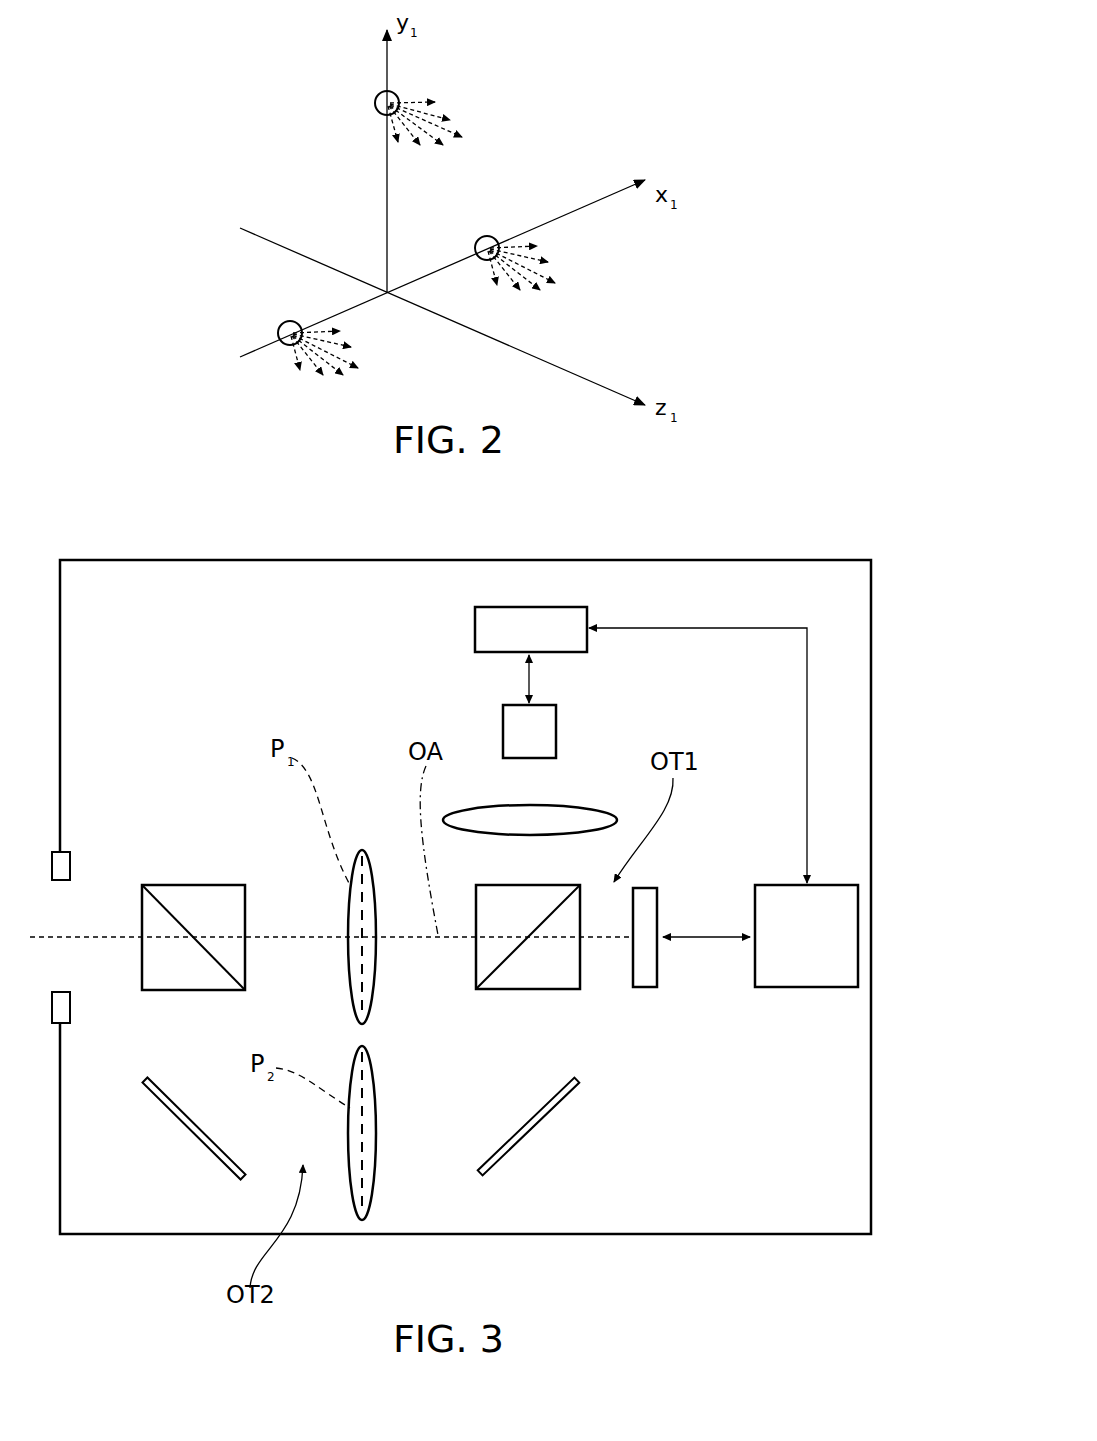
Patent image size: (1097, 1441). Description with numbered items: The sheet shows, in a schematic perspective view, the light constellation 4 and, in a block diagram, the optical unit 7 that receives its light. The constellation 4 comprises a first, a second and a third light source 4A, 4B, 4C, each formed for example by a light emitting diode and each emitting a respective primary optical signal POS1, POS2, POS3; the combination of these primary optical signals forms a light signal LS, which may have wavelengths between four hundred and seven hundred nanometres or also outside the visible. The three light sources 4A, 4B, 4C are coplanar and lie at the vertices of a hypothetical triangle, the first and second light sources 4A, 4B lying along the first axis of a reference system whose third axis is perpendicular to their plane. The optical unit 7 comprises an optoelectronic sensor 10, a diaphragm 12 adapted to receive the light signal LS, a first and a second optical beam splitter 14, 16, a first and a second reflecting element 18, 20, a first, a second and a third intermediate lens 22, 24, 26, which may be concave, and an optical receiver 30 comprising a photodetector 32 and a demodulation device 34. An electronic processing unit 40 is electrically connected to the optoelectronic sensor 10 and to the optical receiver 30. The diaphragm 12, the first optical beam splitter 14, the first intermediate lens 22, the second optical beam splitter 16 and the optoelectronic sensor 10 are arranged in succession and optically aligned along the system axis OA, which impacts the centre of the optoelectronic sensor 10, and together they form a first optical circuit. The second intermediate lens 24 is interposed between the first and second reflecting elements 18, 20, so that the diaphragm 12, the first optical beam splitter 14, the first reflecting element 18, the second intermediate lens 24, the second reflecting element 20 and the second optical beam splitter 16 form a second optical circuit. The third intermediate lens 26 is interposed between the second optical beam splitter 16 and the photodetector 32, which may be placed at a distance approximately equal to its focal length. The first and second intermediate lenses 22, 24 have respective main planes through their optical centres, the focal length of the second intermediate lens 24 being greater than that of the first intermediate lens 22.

In FIG. 2, the constellation 4 is at (586, 106).
In FIG. 2, the first light source 4A is at (494, 237).
In FIG. 2, the second light source 4B is at (280, 325).
In FIG. 2, the third light source 4C is at (376, 100).
In FIG. 2, the primary optical signal POS1 is at (550, 278).
In FIG. 2, the primary optical signal POS2 is at (356, 360).
In FIG. 2, the primary optical signal POS3 is at (438, 115).
In FIG. 3, the optical unit 7 is at (884, 540).
In FIG. 3, the optoelectronic sensor 10 is at (650, 975).
In FIG. 3, the diaphragm 12 is at (62, 865).
In FIG. 3, the first optical beam splitter 14 is at (207, 910).
In FIG. 3, the second optical beam splitter 16 is at (550, 975).
In FIG. 3, the first reflecting element 18 is at (178, 1118).
In FIG. 3, the second reflecting element 20 is at (543, 1115).
In FIG. 3, the first intermediate lens 22 is at (375, 885).
In FIG. 3, the second intermediate lens 24 is at (370, 1117).
In FIG. 3, the third intermediate lens 26 is at (586, 818).
In FIG. 3, the optical receiver 30 is at (478, 688).
In FIG. 3, the photodetector 32 is at (552, 712).
In FIG. 3, the demodulation device 34 is at (475, 615).
In FIG. 3, the electronic processing unit 40 is at (775, 975).